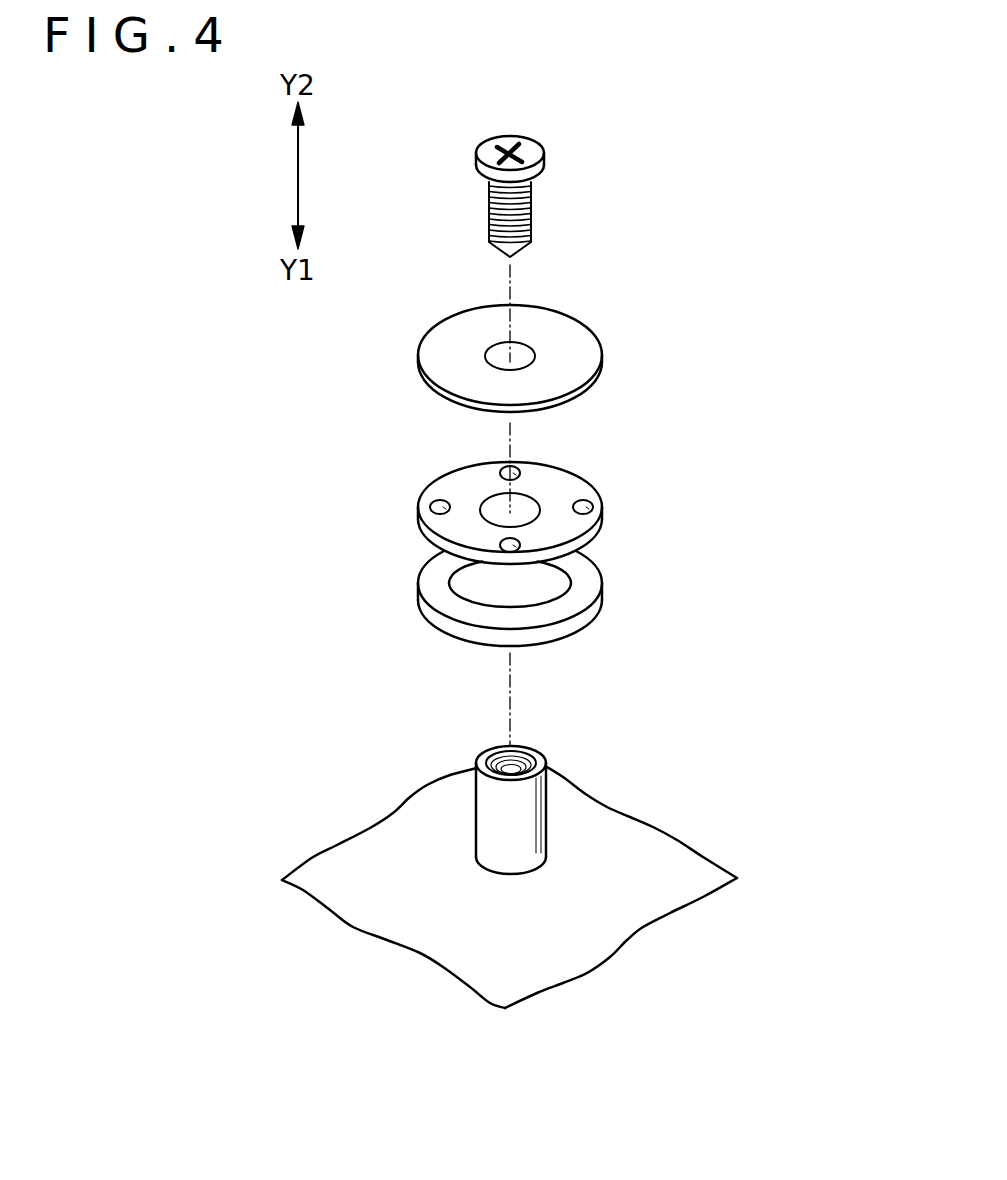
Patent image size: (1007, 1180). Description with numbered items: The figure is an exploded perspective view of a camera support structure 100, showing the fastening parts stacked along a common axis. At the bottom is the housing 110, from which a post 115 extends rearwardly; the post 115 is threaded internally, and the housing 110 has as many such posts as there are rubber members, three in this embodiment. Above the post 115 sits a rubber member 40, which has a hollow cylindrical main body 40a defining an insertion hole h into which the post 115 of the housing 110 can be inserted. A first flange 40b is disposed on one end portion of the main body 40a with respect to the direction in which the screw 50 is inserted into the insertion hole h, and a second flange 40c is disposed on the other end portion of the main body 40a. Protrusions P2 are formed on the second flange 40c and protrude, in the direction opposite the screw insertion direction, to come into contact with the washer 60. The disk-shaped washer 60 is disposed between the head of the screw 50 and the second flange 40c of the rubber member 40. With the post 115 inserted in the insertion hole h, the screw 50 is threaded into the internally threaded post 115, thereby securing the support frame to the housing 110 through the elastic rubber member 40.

The fastening structure 100 is at (702, 325).
The screw 50 is at (538, 170).
The washer 60 is at (553, 307).
The rubber member 40 is at (605, 476).
The main body 40a is at (568, 573).
The first flange 40b is at (423, 600).
The second flange 40c is at (463, 490).
The protrusion P2 is at (505, 466).
The insertion hole h is at (523, 498).
The post 115 is at (541, 782).
The housing 110 is at (668, 852).